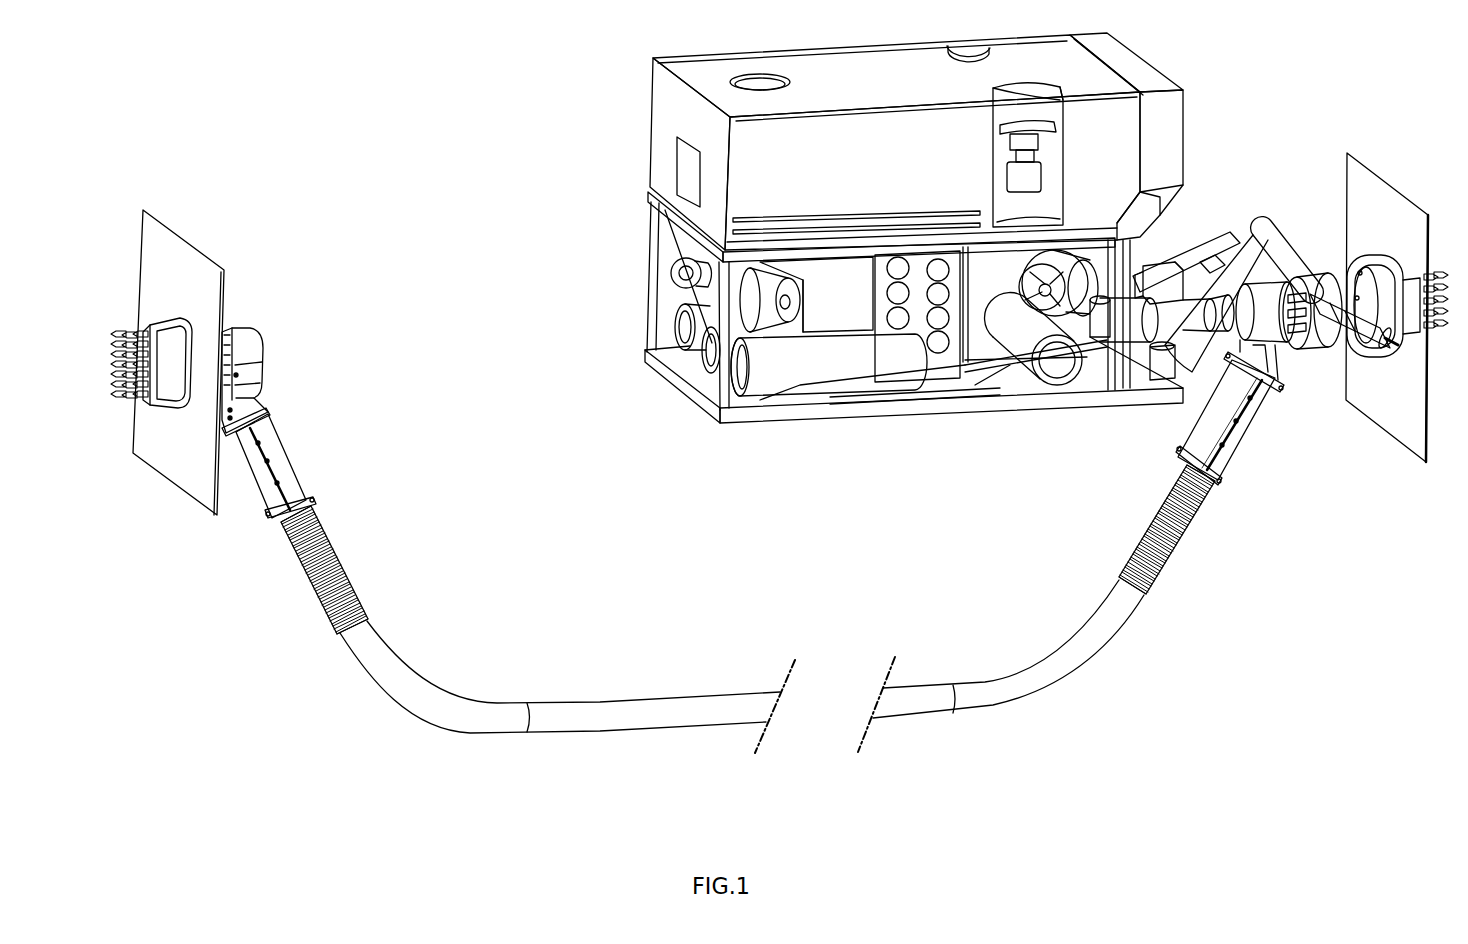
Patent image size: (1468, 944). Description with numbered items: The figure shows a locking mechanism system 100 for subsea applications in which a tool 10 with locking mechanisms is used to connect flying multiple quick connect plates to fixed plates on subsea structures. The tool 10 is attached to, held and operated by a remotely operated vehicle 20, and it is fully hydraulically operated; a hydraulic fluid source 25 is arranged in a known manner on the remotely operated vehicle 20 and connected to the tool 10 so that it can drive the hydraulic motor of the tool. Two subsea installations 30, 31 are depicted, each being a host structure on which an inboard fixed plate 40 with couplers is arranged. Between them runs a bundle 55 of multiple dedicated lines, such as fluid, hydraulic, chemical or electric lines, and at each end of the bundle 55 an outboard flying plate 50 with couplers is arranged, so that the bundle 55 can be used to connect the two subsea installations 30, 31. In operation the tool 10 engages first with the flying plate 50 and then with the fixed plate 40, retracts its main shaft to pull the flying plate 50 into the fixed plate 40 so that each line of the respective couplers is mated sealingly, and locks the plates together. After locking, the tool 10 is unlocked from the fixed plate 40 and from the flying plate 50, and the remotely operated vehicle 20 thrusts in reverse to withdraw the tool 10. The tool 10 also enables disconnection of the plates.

The locking mechanism system 100 is at (580, 241).
The remotely operated vehicle 20 is at (646, 116).
The hydraulic fluid source 25 is at (838, 295).
The tool 10 is at (1163, 275).
The subsea installation 30 is at (1405, 526).
The subsea installation 31 is at (180, 460).
The fixed plate 40 is at (165, 342).
The flying plate 50 is at (1262, 501).
The bundle 55 is at (694, 728).